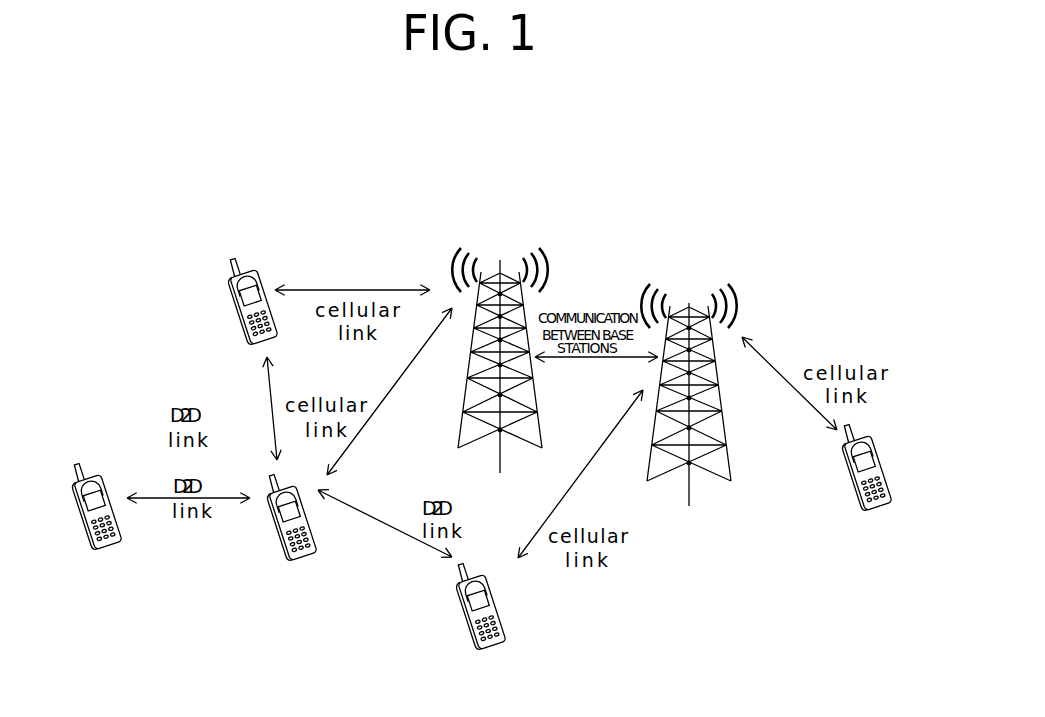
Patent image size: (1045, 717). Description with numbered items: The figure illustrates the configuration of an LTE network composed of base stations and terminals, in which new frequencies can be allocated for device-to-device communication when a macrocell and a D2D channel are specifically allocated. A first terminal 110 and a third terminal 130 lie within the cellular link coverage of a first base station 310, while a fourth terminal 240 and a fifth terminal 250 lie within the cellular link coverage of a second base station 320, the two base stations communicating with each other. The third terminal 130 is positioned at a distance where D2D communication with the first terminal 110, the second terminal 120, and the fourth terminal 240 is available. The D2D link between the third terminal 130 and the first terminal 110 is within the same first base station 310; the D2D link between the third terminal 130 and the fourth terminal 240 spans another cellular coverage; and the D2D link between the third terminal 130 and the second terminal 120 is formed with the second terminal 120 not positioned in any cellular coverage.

The first terminal 110 is at (238, 316).
The second terminal 120 is at (112, 545).
The third terminal 130 is at (305, 553).
The fourth terminal 240 is at (500, 640).
The fifth terminal 250 is at (845, 487).
The first base station 310 is at (500, 262).
The second base station 320 is at (689, 303).